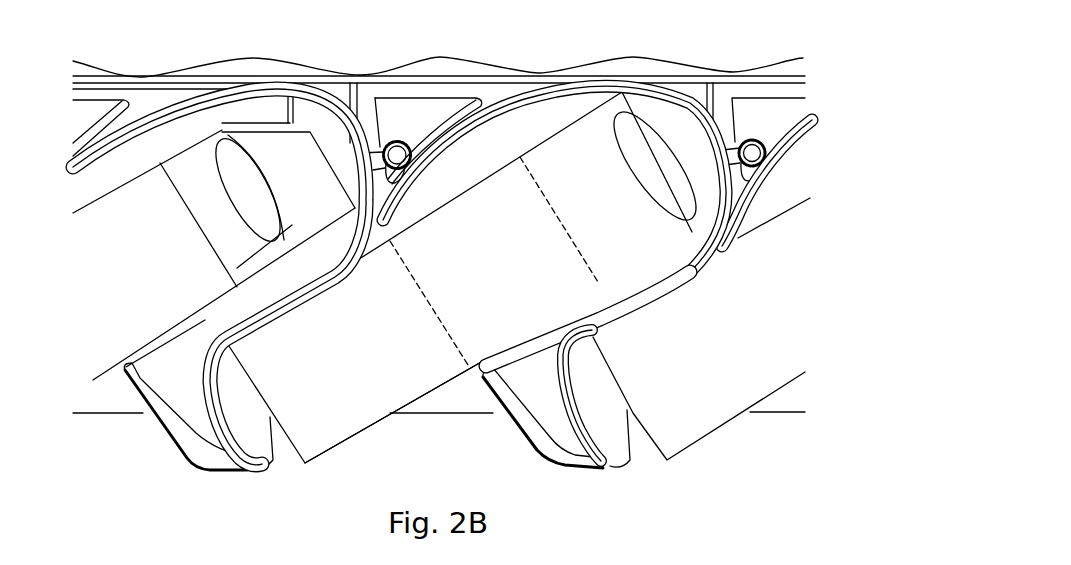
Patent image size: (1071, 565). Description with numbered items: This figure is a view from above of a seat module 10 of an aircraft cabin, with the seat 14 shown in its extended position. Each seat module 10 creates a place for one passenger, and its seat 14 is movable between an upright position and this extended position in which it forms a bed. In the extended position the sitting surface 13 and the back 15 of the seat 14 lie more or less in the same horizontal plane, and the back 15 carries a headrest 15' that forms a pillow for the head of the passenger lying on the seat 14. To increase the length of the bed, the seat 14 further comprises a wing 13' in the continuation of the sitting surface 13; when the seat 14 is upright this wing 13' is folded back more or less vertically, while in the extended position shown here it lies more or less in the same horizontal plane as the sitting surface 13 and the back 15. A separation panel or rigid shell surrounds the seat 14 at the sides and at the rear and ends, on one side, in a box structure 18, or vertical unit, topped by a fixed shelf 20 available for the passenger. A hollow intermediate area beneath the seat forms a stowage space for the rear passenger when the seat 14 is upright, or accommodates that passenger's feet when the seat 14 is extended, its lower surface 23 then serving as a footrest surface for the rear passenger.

The seat module 10 is at (643, 462).
The sitting surface 13 is at (494, 261).
The wing 13' is at (424, 277).
The seat 14 is at (372, 434).
The back 15 is at (640, 162).
The headrest 15' is at (650, 119).
The box structure 18 is at (231, 475).
The fixed shelf 20 is at (187, 413).
The lower surface 23 is at (261, 451).